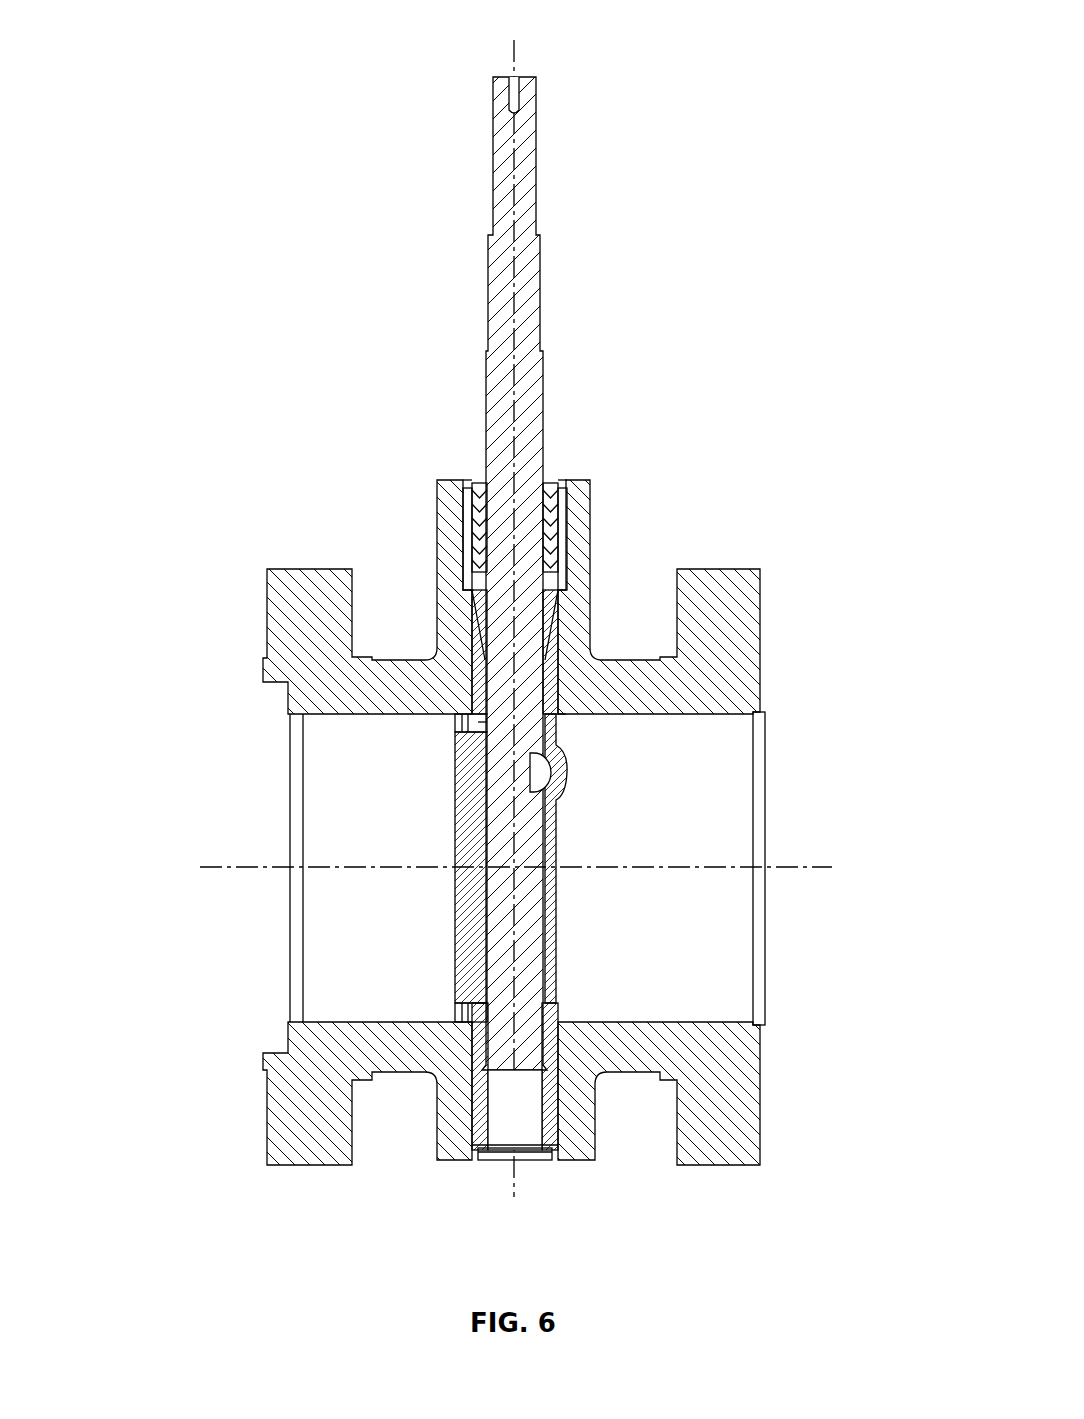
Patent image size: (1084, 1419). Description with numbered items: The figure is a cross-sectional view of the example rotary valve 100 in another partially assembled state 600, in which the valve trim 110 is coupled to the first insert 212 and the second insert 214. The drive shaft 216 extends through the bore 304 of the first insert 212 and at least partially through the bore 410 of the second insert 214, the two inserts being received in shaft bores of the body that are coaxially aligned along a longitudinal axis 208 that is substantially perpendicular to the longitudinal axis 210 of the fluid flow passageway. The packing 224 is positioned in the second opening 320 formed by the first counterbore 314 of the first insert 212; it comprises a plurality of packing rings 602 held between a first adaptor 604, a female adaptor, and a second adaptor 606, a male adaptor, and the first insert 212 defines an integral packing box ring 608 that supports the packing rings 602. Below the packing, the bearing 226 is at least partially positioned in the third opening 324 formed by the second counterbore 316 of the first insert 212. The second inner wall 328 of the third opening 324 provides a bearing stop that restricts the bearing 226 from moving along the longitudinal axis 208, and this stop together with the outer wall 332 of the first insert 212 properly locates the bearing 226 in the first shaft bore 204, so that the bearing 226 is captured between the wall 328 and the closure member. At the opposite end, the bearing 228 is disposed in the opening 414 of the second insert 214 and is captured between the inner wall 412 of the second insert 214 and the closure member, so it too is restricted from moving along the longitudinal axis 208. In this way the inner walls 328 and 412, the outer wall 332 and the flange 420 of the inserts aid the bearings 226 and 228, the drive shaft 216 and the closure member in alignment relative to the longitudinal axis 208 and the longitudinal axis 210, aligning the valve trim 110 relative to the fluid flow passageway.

The rotary valve 100 is at (228, 45).
The partially assembled state 600 is at (207, 128).
The valve trim 110 is at (450, 332).
The first shaft bore 204 is at (483, 478).
The longitudinal axis 208 is at (515, 65).
The longitudinal axis 210 is at (825, 866).
The first insert 212 is at (560, 532).
The second insert 214 is at (557, 1110).
The drive shaft 216 is at (537, 207).
The packing 224 is at (565, 560).
The bearing 226 is at (553, 720).
The bearing 228 is at (553, 1008).
The bore 304 is at (558, 622).
The first counterbore 314 is at (587, 489).
The second opening 320 is at (563, 497).
The second counterbore 316 is at (722, 686).
The third opening 324 is at (553, 700).
The second inner wall 328 is at (480, 652).
The outer wall 332 is at (470, 590).
The bore 410 is at (483, 1125).
The inner wall 412 is at (483, 1075).
The opening 414 is at (557, 1042).
The flange 420 is at (557, 1160).
The packing rings 602 is at (480, 506).
The first adaptor 604 is at (500, 499).
The second adaptor 606 is at (480, 572).
The integral packing box ring 608 is at (557, 585).